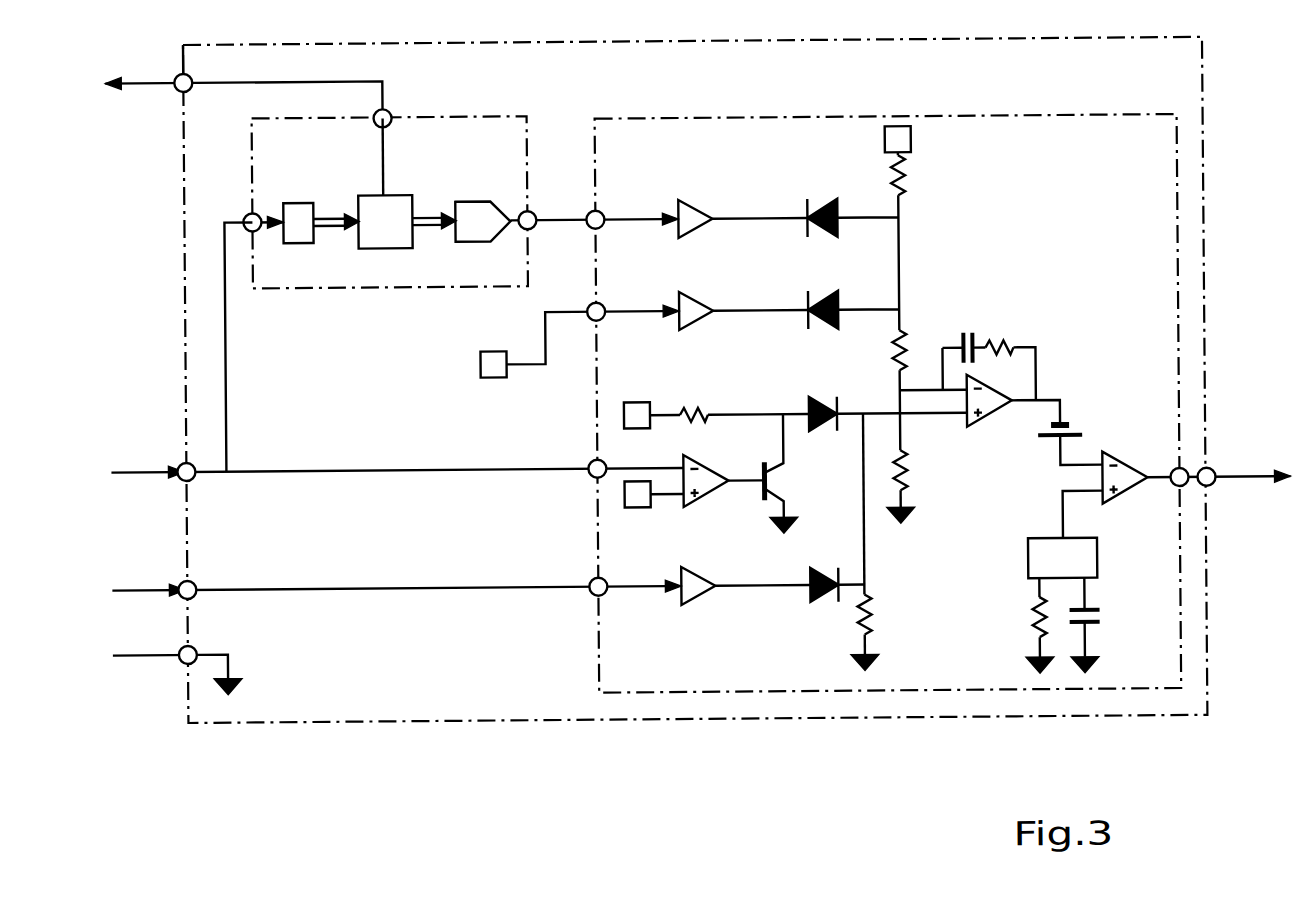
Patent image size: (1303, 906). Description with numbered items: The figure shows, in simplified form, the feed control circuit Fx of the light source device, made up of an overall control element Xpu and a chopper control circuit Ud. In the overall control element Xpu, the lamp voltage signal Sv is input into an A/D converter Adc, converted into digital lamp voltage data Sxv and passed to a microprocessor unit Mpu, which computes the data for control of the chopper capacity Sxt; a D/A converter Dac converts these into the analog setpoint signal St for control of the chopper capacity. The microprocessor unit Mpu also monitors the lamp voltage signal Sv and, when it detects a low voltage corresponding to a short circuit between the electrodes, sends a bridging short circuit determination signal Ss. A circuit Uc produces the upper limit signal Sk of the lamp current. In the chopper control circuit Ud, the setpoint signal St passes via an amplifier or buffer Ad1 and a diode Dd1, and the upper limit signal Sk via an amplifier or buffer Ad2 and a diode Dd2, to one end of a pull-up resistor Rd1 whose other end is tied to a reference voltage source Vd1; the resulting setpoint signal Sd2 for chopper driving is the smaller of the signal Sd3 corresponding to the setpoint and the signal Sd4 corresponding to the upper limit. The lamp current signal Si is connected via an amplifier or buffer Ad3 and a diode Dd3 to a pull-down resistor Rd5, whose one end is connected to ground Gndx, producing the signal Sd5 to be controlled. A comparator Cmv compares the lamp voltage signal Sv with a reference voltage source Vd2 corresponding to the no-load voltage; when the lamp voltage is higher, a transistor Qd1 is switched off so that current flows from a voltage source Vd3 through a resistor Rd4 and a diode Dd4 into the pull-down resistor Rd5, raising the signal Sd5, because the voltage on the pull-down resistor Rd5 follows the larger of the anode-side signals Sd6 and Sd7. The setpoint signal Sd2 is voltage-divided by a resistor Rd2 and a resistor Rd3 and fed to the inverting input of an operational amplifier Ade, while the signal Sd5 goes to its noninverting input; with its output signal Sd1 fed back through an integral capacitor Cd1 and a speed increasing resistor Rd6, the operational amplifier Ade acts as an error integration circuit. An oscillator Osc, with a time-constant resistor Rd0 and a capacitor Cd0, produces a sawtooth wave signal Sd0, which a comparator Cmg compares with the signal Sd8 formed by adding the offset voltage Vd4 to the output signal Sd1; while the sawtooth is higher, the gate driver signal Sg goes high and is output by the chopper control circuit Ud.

The feed control circuit Fx is at (1205, 652).
The chopper control circuit Ud is at (594, 657).
The overall control element Xpu is at (249, 192).
The bridging short circuit determination signal Ss is at (146, 84).
The A/D converter Adc is at (293, 203).
The lamp voltage data Sxv is at (329, 218).
The microprocessor unit Mpu is at (375, 250).
The data for control of the chopper capacity Sxt is at (424, 217).
The D/A converter Dac is at (472, 205).
The setpoint signal for control of the chopper capacity St is at (564, 222).
The amplifier or buffer Ad1 is at (673, 204).
The signal corresponding to the setpoint signal Sd3 is at (744, 222).
The diode Dd1 is at (823, 205).
The setpoint signal for chopper driving Sd2 is at (898, 250).
The reference voltage source Vd1 is at (910, 145).
The pull-up resistor Rd1 is at (905, 182).
The upper limit signal of the lamp current Sk is at (512, 368).
The circuit for producing the upper limit signal of the lamp current Uc is at (477, 366).
The amplifier or buffer Ad2 is at (673, 296).
The signal corresponding to the upper limit signal Sd4 is at (744, 314).
The diode Dd2 is at (823, 297).
The resistor Rd2 is at (894, 358).
The integral capacitor Cd1 is at (958, 336).
The speed increasing resistor Rd6 is at (1000, 340).
The operational amplifier Ade is at (962, 433).
The output signal of the operational amplifier Sd1 is at (1050, 406).
The offset voltage Vd4 is at (1077, 430).
The signal Sd8 is at (1057, 462).
The resistor Rd3 is at (903, 492).
The comparator Cmg is at (1130, 505).
The gate driver signal Sg is at (1230, 484).
The sawtooth wave signal Sd0 is at (1059, 518).
The oscillator Osc is at (1093, 573).
The resistor for determining the time constant Rd0 is at (1033, 627).
The capacitor Cd0 is at (1098, 630).
The voltage source Vd3 is at (630, 406).
The resistor Rd4 is at (682, 415).
The anode-side signal Sd7 is at (747, 417).
The diode Dd4 is at (812, 400).
The lamp voltage signal Sv is at (130, 470).
The reference voltage source Vd2 is at (631, 511).
The comparator Cmv is at (708, 507).
The transistor Qd1 is at (770, 484).
The lamp current signal Si is at (133, 588).
The amplifier or buffer Ad3 is at (678, 607).
The anode-side signal Sd6 is at (753, 594).
The diode Dd3 is at (824, 574).
The signal to be controlled Sd5 is at (860, 578).
The pull-down resistor Rd5 is at (869, 625).
The ground Gndx is at (128, 656).